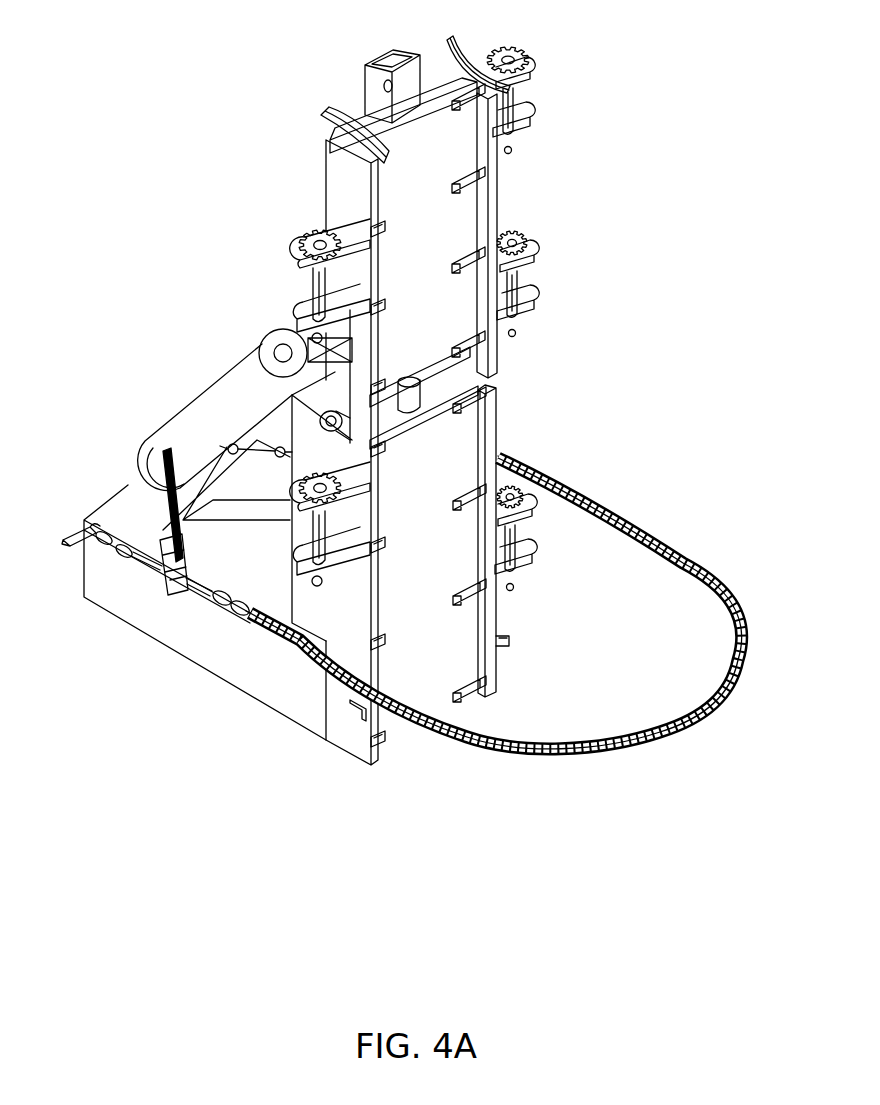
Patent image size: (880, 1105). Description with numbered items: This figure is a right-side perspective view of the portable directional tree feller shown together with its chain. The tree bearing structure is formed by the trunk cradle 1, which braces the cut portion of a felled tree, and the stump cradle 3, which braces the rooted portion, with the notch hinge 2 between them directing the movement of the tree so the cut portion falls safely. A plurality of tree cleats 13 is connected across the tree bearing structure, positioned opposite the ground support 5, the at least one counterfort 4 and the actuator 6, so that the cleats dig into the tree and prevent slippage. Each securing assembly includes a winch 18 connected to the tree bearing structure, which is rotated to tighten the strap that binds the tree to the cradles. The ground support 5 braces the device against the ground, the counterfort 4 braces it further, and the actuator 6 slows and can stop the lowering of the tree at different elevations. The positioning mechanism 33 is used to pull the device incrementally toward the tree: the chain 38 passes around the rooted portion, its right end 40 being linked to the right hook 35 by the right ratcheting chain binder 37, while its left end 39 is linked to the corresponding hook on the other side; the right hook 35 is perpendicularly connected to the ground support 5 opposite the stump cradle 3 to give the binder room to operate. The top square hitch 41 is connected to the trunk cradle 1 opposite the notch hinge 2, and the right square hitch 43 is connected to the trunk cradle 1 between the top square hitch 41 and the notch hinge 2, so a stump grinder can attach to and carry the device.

The trunk cradle 1 is at (517, 203).
The notch hinge 2 is at (519, 362).
The stump cradle 3 is at (505, 620).
The counterfort 4 is at (243, 508).
The ground support 5 is at (203, 678).
The actuator 6 is at (194, 394).
The tree cleats 13 is at (476, 120).
The winch 18 is at (527, 108).
The positioning mechanism 33 is at (716, 716).
The right hook 35 is at (75, 538).
The right ratcheting chain binder 37 is at (186, 597).
The chain 38 is at (697, 564).
The left end 39 is at (503, 456).
The right end 40 is at (250, 620).
The top square hitch 41 is at (386, 100).
The right square hitch 43 is at (340, 366).